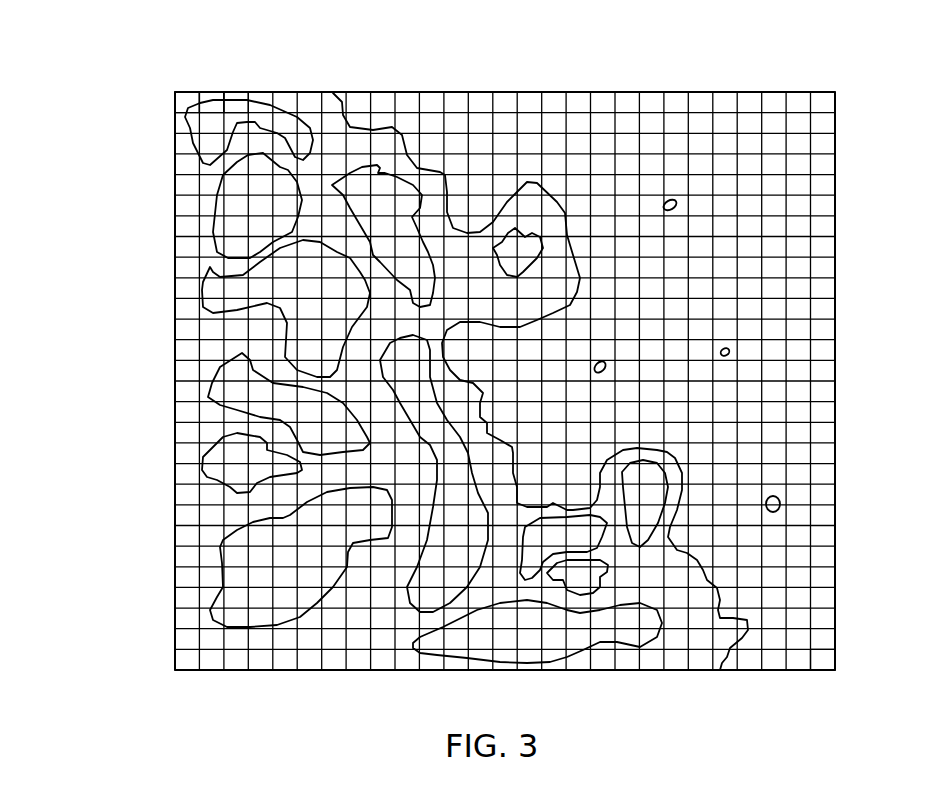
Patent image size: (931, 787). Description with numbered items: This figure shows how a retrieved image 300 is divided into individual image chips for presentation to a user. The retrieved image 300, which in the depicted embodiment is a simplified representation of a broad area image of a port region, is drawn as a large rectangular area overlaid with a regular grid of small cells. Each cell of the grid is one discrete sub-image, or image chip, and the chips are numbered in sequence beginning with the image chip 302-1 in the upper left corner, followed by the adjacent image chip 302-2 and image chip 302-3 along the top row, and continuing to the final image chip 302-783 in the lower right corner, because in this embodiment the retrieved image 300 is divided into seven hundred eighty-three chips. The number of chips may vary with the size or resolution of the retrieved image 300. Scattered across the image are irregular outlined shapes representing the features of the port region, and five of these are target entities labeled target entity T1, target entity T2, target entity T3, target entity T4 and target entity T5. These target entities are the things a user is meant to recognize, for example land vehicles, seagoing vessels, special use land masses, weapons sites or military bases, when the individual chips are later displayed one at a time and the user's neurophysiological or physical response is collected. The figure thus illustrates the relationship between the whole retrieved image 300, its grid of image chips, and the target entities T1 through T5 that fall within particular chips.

The retrieved image 300 is at (435, 365).
The image chip 302-1 is at (182, 91).
The image chip 302-2 is at (212, 91).
The image chip 302-3 is at (240, 91).
The image chip 302-783 is at (822, 672).
The target entity T1 is at (264, 222).
The target entity T2 is at (523, 268).
The target entity T3 is at (257, 479).
The target entity T4 is at (731, 352).
The target entity T5 is at (600, 576).